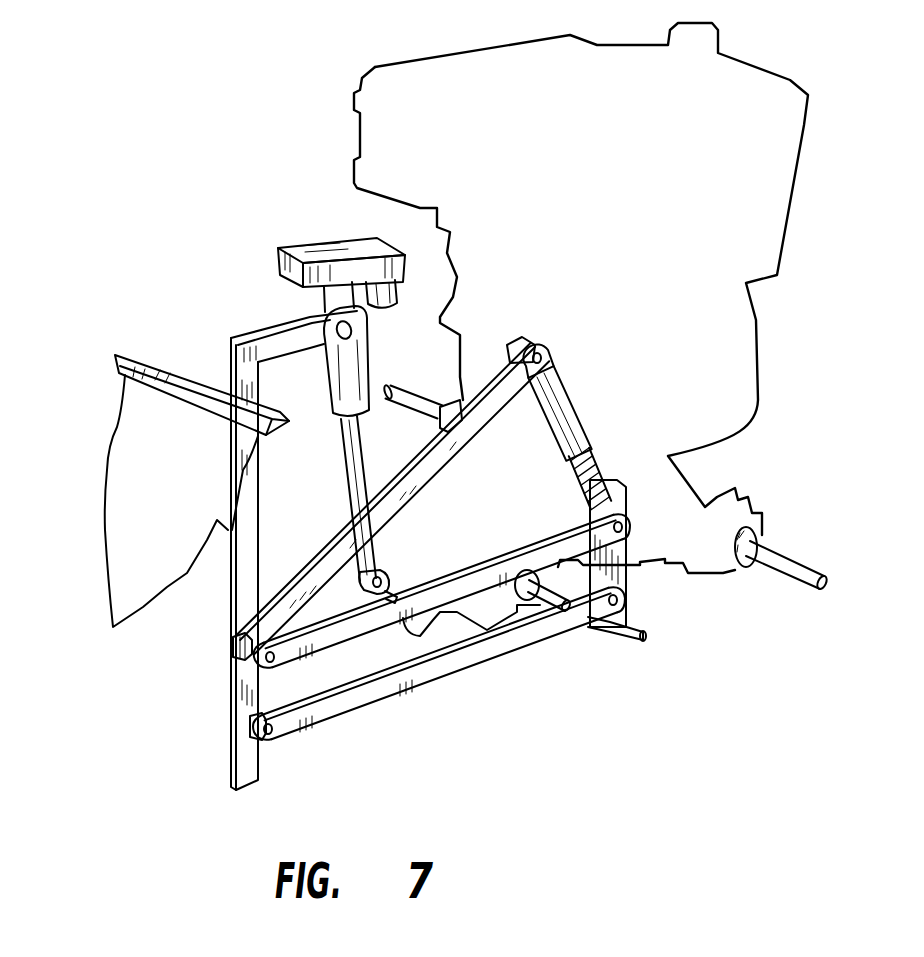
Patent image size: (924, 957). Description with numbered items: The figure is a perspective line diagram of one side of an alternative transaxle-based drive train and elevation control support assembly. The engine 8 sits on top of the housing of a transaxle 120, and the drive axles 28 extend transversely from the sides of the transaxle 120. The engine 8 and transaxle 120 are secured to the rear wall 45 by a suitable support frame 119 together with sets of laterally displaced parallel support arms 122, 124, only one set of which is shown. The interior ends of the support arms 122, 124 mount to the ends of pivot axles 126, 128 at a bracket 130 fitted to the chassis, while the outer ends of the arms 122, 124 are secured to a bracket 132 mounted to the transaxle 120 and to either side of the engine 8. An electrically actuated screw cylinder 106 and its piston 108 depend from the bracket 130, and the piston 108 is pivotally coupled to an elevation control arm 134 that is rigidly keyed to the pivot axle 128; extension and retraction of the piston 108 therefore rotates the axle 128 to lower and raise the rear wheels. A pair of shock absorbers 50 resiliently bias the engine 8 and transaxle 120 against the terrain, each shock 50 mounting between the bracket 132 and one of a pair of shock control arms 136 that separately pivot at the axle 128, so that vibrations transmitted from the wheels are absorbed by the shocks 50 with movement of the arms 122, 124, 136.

The engine 8 is at (790, 127).
The drive axles 28 is at (817, 567).
The rear wall 45 is at (213, 490).
The shock absorbers 50 is at (572, 398).
The screw cylinder 106 is at (353, 367).
The piston 108 is at (348, 458).
The support frame 119 is at (245, 320).
The transaxle 120 is at (658, 572).
The support arm 122 is at (418, 677).
The support arm 124 is at (318, 645).
The pivot axle 126 is at (258, 730).
The pivot axle 128 is at (233, 652).
The bracket 130 is at (254, 767).
The bracket 132 is at (620, 547).
The elevation control arm 134 is at (390, 593).
The shock control arms 136 is at (487, 370).